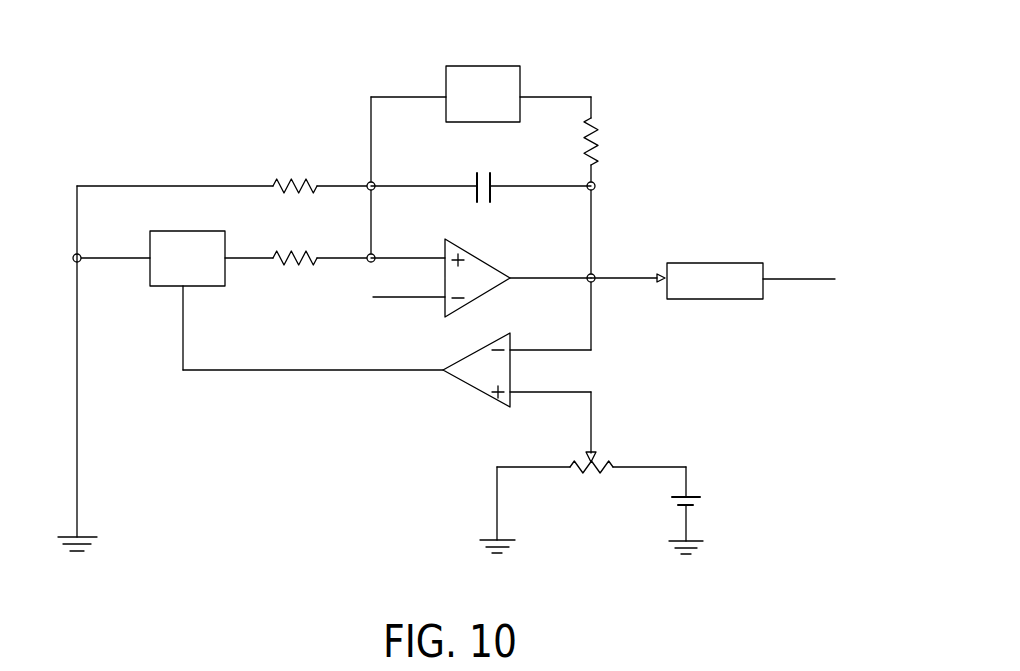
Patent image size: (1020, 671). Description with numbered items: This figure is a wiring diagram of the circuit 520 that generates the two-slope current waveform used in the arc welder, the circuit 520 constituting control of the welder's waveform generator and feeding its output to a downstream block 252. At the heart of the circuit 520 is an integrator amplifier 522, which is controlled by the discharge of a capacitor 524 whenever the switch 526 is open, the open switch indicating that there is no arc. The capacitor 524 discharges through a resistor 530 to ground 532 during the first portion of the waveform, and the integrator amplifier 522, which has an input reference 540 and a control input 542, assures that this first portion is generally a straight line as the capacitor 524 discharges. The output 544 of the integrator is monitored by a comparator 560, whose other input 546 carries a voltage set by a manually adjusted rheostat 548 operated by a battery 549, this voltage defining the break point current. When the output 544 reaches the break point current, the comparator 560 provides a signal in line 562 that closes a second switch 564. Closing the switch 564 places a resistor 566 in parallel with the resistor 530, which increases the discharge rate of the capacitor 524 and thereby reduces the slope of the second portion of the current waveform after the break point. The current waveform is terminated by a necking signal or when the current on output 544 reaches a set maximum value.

The circuit 520 is at (672, 108).
The integrator amplifier 522 is at (490, 293).
The capacitor 524 is at (473, 180).
The switch 526 is at (523, 76).
The resistor 530 is at (297, 180).
The ground 532 is at (88, 535).
The input reference 540 is at (413, 300).
The control input 542 is at (415, 258).
The output 544 is at (633, 278).
The output block 252 is at (730, 263).
The input 546 is at (593, 407).
The rheostat 548 is at (583, 473).
The battery 549 is at (700, 488).
The comparator 560 is at (470, 387).
The line 562 is at (297, 372).
The switch 564 is at (173, 231).
The resistor 566 is at (287, 264).